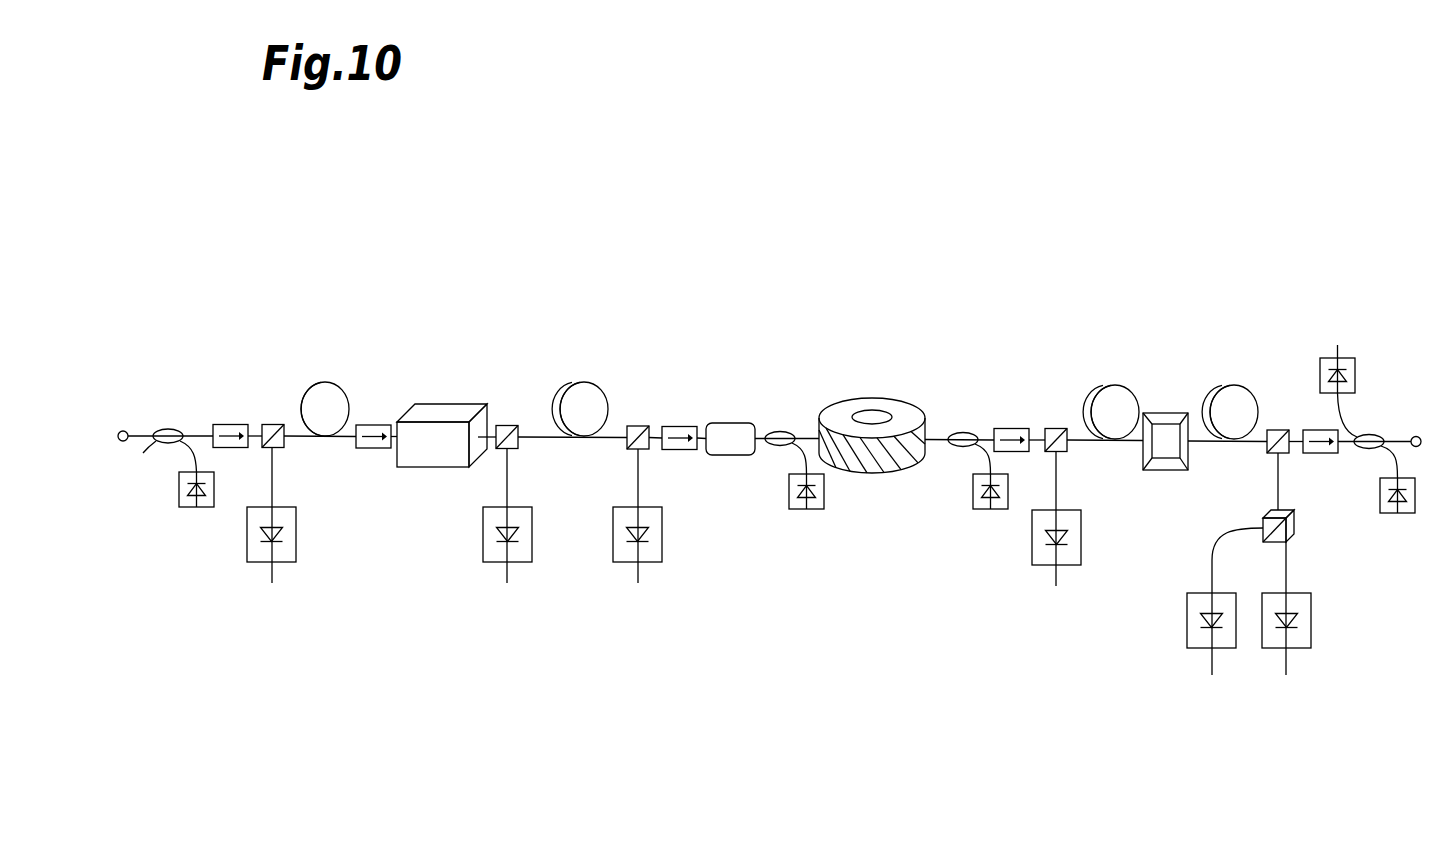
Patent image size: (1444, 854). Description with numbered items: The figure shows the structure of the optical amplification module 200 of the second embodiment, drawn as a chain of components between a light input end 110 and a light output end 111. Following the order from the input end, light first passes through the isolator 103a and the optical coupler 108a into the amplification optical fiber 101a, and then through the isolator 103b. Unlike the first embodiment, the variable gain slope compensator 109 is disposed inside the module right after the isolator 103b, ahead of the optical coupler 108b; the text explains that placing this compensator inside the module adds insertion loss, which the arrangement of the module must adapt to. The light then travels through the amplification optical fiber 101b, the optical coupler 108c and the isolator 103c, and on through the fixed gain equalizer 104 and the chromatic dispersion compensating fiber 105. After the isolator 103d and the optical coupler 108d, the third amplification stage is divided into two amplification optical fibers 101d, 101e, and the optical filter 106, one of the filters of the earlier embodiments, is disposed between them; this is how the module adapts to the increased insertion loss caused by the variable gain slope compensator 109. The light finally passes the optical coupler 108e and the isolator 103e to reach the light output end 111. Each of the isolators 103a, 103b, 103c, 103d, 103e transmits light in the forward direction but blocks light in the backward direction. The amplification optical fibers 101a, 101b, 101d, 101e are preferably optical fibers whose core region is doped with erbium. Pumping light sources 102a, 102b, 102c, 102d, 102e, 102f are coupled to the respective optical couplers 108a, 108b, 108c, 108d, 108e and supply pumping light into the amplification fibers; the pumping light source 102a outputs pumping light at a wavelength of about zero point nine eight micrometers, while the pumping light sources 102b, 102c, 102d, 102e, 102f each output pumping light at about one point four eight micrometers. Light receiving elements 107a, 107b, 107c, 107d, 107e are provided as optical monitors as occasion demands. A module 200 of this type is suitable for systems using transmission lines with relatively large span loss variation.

The optical amplification module 200 is at (843, 176).
The light input end 110 is at (123, 430).
The light output end 111 is at (1416, 436).
The amplification optical fiber 101a is at (323, 382).
The amplification optical fiber 101b is at (583, 381).
The amplification optical fiber 101d is at (1114, 385).
The amplification optical fiber 101e is at (1233, 385).
The pumping light source 102a is at (290, 563).
The pumping light source 102b is at (521, 563).
The pumping light source 102c is at (652, 563).
The pumping light source 102d is at (1075, 566).
The pumping light source 102e is at (1227, 649).
The pumping light source 102f is at (1300, 649).
The isolator 103a is at (231, 424).
The isolator 103b is at (374, 424).
The isolator 103c is at (678, 426).
The isolator 103d is at (1011, 428).
The isolator 103e is at (1320, 454).
The fixed gain equalizer 104 is at (730, 456).
The chromatic dispersion compensating fiber 105 is at (872, 398).
The optical filter 106 is at (1162, 471).
The light receiving element 107a is at (184, 508).
The light receiving element 107b is at (818, 511).
The light receiving element 107c is at (978, 511).
The light receiving element 107d is at (1344, 355).
The light receiving element 107e is at (1400, 514).
The optical coupler 108a is at (284, 449).
The optical coupler 108b is at (518, 450).
The optical coupler 108c is at (649, 450).
The optical coupler 108d is at (1068, 453).
The optical coupler 108e is at (1266, 453).
The variable gain slope compensator 109 is at (428, 468).